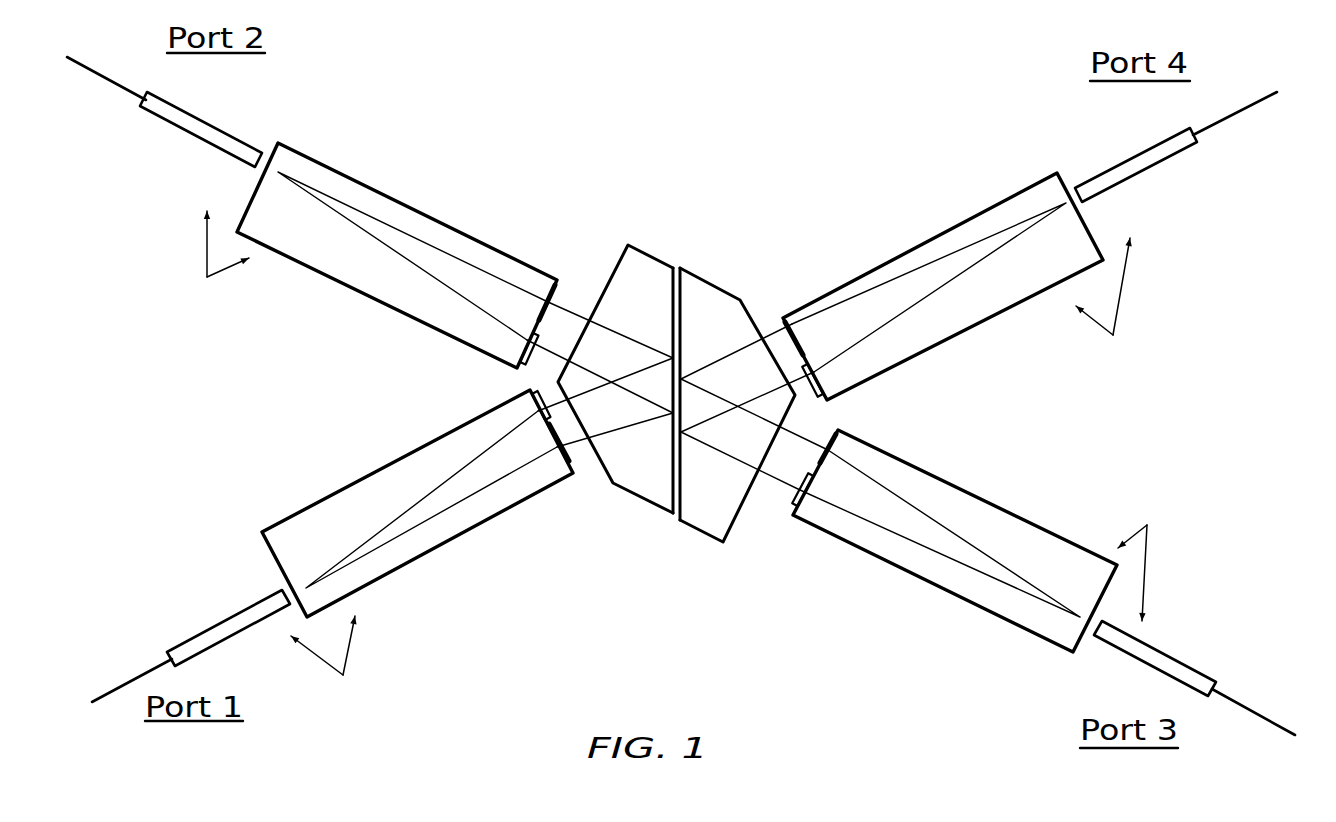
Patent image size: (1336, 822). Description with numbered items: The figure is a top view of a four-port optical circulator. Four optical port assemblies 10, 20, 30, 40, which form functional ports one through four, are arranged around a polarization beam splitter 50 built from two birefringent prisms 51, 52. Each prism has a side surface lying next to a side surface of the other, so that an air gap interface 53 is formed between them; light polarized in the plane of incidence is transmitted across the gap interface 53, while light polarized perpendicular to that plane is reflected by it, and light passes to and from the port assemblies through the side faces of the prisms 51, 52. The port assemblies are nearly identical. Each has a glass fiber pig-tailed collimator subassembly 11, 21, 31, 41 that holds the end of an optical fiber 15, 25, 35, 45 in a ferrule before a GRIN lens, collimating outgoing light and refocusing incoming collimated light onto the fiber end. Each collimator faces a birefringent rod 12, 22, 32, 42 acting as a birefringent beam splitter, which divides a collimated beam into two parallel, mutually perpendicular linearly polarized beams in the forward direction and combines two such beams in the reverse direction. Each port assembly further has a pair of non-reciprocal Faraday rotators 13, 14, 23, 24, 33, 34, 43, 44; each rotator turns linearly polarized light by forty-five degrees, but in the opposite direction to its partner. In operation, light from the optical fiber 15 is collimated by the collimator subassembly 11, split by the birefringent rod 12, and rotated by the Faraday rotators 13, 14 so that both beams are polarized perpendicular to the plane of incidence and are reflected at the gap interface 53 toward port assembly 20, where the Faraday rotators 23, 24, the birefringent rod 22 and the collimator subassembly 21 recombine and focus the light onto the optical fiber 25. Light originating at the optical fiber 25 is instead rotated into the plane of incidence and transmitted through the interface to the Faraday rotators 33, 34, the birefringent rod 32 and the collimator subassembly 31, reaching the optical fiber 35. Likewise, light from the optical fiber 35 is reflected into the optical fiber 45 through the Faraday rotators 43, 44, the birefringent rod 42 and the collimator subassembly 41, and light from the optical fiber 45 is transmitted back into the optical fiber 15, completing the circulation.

The optical port assembly 10 is at (335, 653).
The collimator subassembly 11 is at (228, 635).
The birefringent rod 12 is at (417, 505).
The Faraday rotator 13 is at (574, 477).
The Faraday rotator 14 is at (540, 480).
The optical fiber 15 is at (128, 672).
The optical port assembly 20 is at (206, 253).
The collimator subassembly 21 is at (201, 133).
The birefringent rod 22 is at (397, 251).
The Faraday rotator 23 is at (565, 270).
The Faraday rotator 24 is at (514, 278).
The optical fiber 25 is at (101, 88).
The optical port assembly 30 is at (1154, 564).
The collimator subassembly 31 is at (1185, 658).
The birefringent rod 32 is at (955, 548).
The Faraday rotator 33 is at (799, 531).
The Faraday rotator 34 is at (850, 525).
The optical fiber 35 is at (1265, 708).
The optical port assembly 40 is at (1118, 294).
The collimator subassembly 41 is at (1143, 169).
The birefringent rod 42 is at (943, 275).
The Faraday rotator 43 is at (805, 300).
The Faraday rotator 44 is at (849, 392).
The optical fiber 45 is at (1242, 122).
The polarization beam splitter 50 is at (676, 386).
The birefringent prism 51 is at (615, 398).
The birefringent prism 52 is at (737, 430).
The air gap interface 53 is at (709, 377).